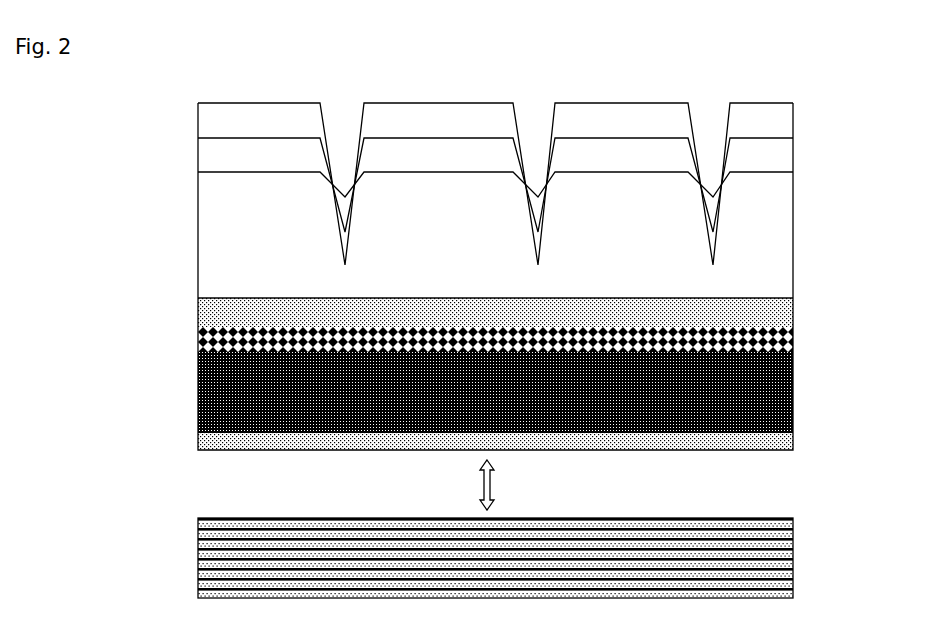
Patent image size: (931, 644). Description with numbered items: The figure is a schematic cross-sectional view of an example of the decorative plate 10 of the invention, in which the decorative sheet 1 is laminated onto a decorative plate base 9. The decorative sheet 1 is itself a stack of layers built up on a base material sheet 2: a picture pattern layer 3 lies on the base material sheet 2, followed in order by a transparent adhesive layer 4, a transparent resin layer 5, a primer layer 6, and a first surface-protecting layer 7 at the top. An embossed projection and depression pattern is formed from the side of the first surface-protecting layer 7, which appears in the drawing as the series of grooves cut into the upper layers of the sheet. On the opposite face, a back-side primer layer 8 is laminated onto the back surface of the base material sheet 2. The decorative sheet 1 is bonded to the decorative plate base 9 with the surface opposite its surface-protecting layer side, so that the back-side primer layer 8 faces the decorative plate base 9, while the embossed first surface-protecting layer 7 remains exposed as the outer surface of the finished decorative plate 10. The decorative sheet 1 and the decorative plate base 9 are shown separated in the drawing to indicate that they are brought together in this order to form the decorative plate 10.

The decorative sheet 1 is at (160, 103).
The base material sheet 2 is at (803, 390).
The picture pattern layer 3 is at (803, 347).
The transparent adhesive layer 4 is at (803, 312).
The transparent resin layer 5 is at (803, 243).
The primer layer 6 is at (803, 158).
The first surface-protecting layer 7 is at (803, 113).
The back-side primer layer 8 is at (803, 440).
The decorative plate base 9 is at (160, 517).
The decorative plate 10 is at (100, 95).